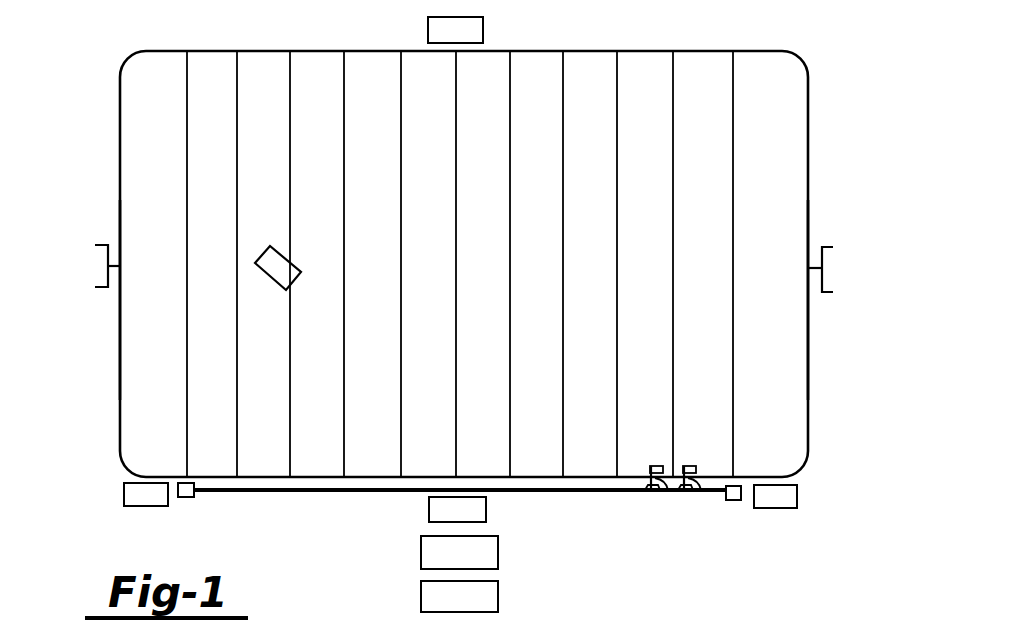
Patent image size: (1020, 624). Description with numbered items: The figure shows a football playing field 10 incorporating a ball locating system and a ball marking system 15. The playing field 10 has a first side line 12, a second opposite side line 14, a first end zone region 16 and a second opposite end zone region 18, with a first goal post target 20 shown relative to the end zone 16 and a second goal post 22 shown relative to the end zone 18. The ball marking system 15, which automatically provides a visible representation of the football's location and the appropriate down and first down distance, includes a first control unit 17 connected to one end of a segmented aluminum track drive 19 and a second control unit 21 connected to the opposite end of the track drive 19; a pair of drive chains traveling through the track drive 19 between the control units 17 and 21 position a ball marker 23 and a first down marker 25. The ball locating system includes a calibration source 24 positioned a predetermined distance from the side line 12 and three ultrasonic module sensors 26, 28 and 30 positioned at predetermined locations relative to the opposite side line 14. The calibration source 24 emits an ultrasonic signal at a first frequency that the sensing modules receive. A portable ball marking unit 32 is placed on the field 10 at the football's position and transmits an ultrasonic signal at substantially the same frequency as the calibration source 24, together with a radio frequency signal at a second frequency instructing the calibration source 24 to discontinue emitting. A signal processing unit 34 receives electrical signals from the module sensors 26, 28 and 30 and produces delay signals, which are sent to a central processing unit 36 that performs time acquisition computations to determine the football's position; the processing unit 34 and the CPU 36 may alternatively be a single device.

The football playing field 10 is at (467, 242).
The first side line 12 is at (688, 51).
The second opposite side line 14 is at (350, 493).
The ball marking system 15 is at (385, 548).
The first end zone region 16 is at (112, 380).
The first control unit 17 is at (188, 498).
The second opposite end zone region 18 is at (810, 335).
The segmented aluminum track drive 19 is at (250, 490).
The first goal post target 20 is at (95, 228).
The second control unit 21 is at (733, 500).
The second goal post 22 is at (840, 238).
The ball marker 23 is at (665, 492).
The calibration source 24 is at (483, 30).
The first down marker 25 is at (700, 490).
The ultrasonic module sensor 26 is at (143, 508).
The ultrasonic module sensor 28 is at (486, 508).
The ultrasonic module sensor 30 is at (785, 508).
The ball marking unit 32 is at (292, 268).
The signal processing unit 34 is at (498, 552).
The central processing unit 36 is at (498, 596).